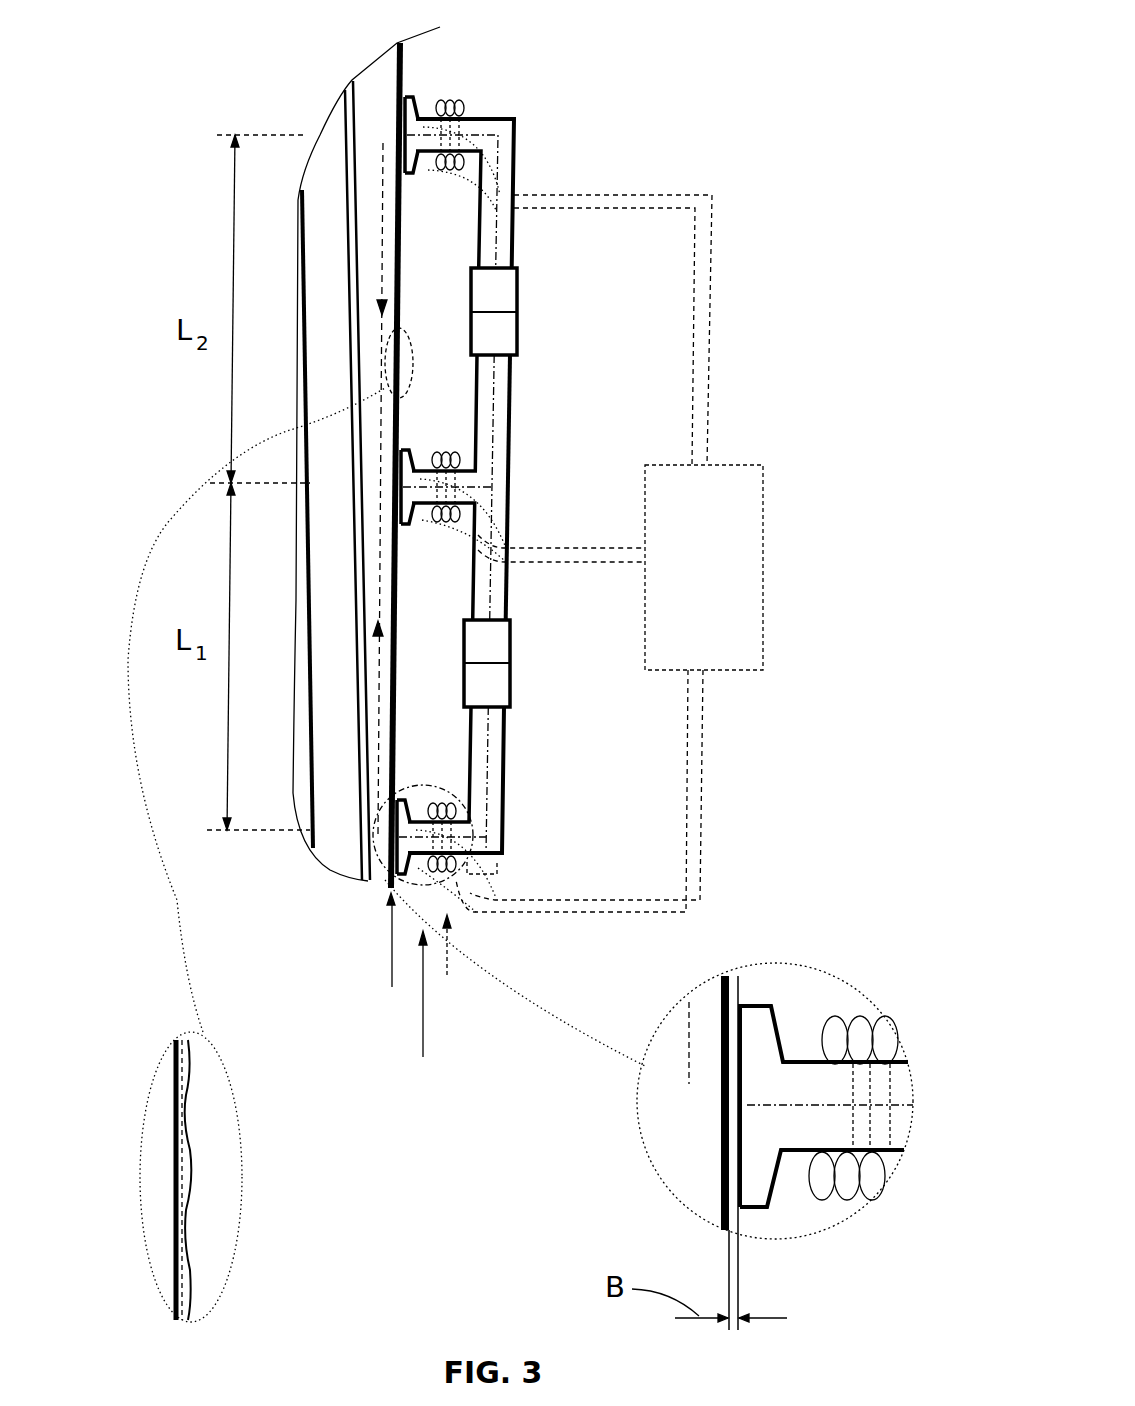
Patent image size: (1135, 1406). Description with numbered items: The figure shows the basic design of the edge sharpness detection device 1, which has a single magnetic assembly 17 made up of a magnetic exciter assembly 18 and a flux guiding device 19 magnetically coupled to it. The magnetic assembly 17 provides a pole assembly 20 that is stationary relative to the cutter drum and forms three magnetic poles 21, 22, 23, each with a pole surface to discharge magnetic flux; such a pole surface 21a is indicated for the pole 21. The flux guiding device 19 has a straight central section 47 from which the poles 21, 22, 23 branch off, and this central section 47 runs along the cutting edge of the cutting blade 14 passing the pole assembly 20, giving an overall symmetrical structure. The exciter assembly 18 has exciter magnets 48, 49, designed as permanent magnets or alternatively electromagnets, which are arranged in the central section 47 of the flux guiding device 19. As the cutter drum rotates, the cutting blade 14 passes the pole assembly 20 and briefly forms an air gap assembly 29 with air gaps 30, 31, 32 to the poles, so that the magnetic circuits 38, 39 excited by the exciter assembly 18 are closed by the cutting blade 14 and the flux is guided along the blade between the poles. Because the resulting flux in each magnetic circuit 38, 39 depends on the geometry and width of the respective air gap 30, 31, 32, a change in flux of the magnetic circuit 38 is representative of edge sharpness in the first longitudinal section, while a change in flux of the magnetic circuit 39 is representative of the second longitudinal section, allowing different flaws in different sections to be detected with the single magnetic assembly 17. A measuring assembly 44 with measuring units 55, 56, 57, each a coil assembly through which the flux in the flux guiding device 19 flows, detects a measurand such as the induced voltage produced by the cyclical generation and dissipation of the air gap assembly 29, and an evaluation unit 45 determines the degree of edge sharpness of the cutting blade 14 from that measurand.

The edge sharpness detection device 1 is at (275, 108).
The cutting blade 14 is at (383, 730).
The magnetic assembly 17 is at (521, 826).
The magnetic exciter assembly 18 is at (511, 658).
The flux guiding device 19 is at (516, 156).
The pole assembly 20 is at (420, 1015).
The magnetic pole 21 is at (412, 815).
The pole surface 21a is at (742, 1002).
The magnetic pole 22 is at (410, 453).
The magnetic pole 23 is at (420, 110).
The air gap assembly 29 is at (390, 959).
The air gap 30 is at (392, 792).
The air gap 31 is at (400, 527).
The air gap 32 is at (402, 180).
The magnetic circuit 38 is at (498, 772).
The magnetic circuit 39 is at (497, 425).
The measuring assembly 44 is at (452, 963).
The evaluation unit 45 is at (692, 583).
The central section 47 is at (480, 876).
The exciter magnet 48 is at (511, 683).
The exciter magnet 49 is at (515, 340).
The measuring unit 55 is at (400, 805).
The measuring unit 56 is at (400, 503).
The measuring unit 57 is at (397, 135).